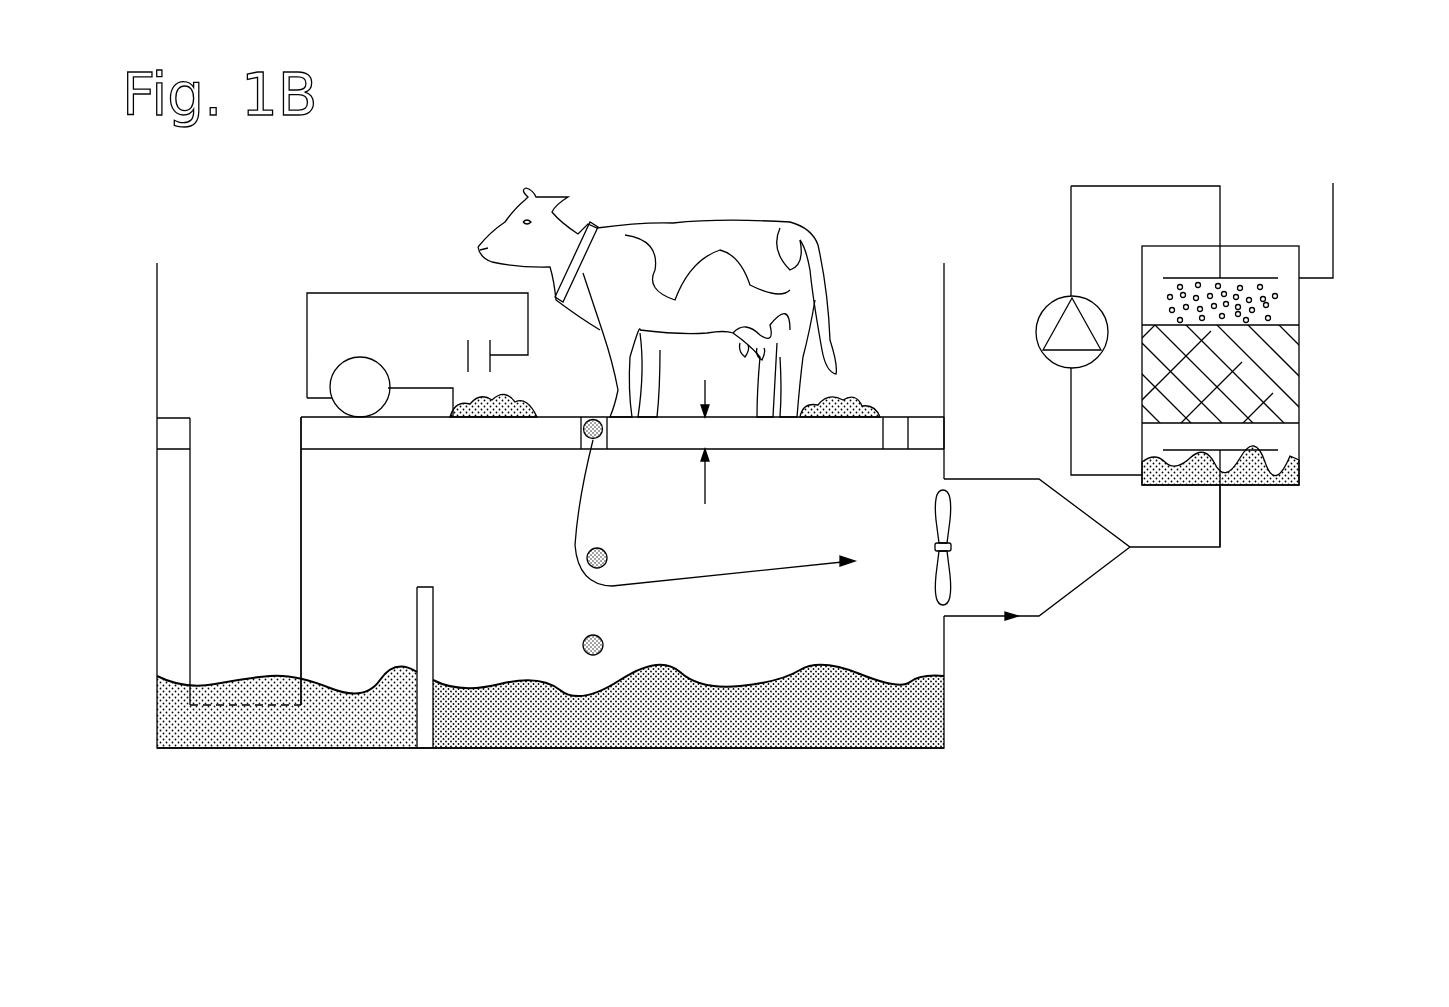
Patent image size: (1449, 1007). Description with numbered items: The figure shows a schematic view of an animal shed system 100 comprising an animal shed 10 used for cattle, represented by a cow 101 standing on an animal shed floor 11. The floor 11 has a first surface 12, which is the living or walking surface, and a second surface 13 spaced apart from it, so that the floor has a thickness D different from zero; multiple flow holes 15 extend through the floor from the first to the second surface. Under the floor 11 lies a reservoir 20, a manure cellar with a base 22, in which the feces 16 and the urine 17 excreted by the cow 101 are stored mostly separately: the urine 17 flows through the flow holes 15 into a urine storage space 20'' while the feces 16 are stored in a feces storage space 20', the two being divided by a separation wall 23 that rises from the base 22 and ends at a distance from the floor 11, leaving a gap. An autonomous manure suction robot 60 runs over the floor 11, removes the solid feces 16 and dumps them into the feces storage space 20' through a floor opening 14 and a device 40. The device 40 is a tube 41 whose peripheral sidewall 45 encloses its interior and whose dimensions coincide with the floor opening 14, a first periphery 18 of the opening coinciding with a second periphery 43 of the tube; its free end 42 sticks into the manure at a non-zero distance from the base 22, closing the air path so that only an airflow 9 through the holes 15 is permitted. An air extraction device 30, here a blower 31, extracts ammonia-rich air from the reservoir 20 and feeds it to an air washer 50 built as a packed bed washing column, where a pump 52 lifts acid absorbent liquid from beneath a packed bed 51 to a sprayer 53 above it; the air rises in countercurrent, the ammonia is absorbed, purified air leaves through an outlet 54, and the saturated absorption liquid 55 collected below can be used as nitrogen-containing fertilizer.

The animal shed system 100 is at (444, 168).
The animal shed 10 is at (919, 186).
The cow 101 is at (689, 248).
The autonomous manure suction robot 60 is at (352, 325).
The floor opening 14 is at (258, 405).
The first periphery 18 is at (190, 422).
The feces 16 is at (520, 412).
The first surface 12 is at (930, 415).
The animal shed floor 11 is at (915, 440).
The second surface 13 is at (772, 450).
The flow holes 15 is at (571, 448).
The airflow 9 is at (574, 554).
The urine 17 is at (607, 558).
The thickness D is at (712, 442).
The device 40 is at (318, 512).
The tube 41 is at (302, 598).
The free end 42 is at (325, 686).
The second periphery 43 is at (191, 445).
The peripheral sidewall 45 is at (185, 497).
The reservoir 20 is at (430, 524).
The feces storage space 20' is at (258, 676).
The urine storage space 20'' is at (688, 671).
The separation wall 23 is at (425, 605).
The base 22 is at (332, 750).
The blower 31 is at (936, 592).
The air extraction device 30 is at (1082, 615).
The air washer 50 is at (1335, 348).
The packed bed 51 is at (1268, 380).
The pump 52 is at (1068, 322).
The sprayer 53 is at (1158, 184).
The outlet 54 is at (1334, 200).
The absorption liquid 55 is at (1265, 483).